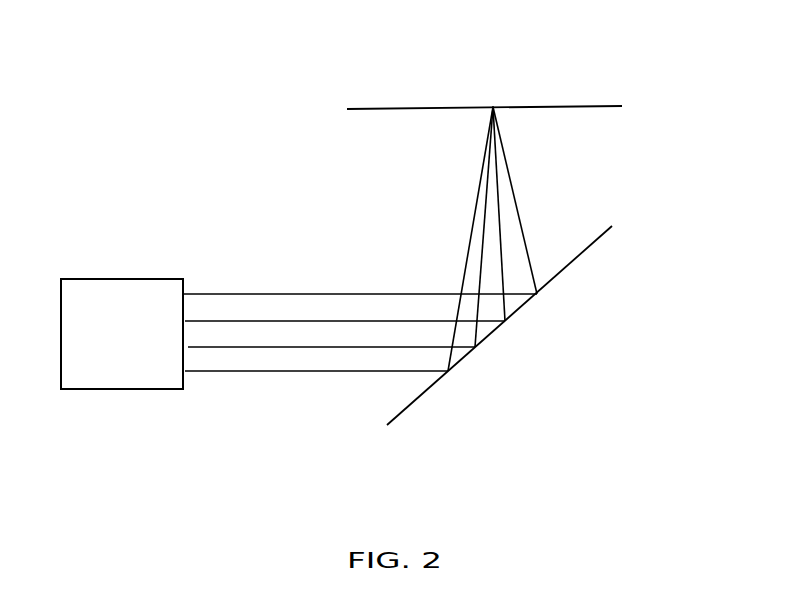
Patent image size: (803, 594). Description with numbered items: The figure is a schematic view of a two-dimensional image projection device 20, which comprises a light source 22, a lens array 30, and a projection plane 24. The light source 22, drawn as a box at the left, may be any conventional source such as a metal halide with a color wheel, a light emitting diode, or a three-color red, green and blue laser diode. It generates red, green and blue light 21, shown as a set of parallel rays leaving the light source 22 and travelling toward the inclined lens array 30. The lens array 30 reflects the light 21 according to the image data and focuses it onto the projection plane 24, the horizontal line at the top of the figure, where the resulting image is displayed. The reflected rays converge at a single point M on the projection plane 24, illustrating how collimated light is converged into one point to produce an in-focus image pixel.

The two-dimensional image projection device 20 is at (252, 151).
The RGB light 21 is at (270, 280).
The light source 22 is at (96, 389).
The projection plane 24 is at (598, 126).
The lens array 30 is at (437, 406).
The point M is at (504, 97).